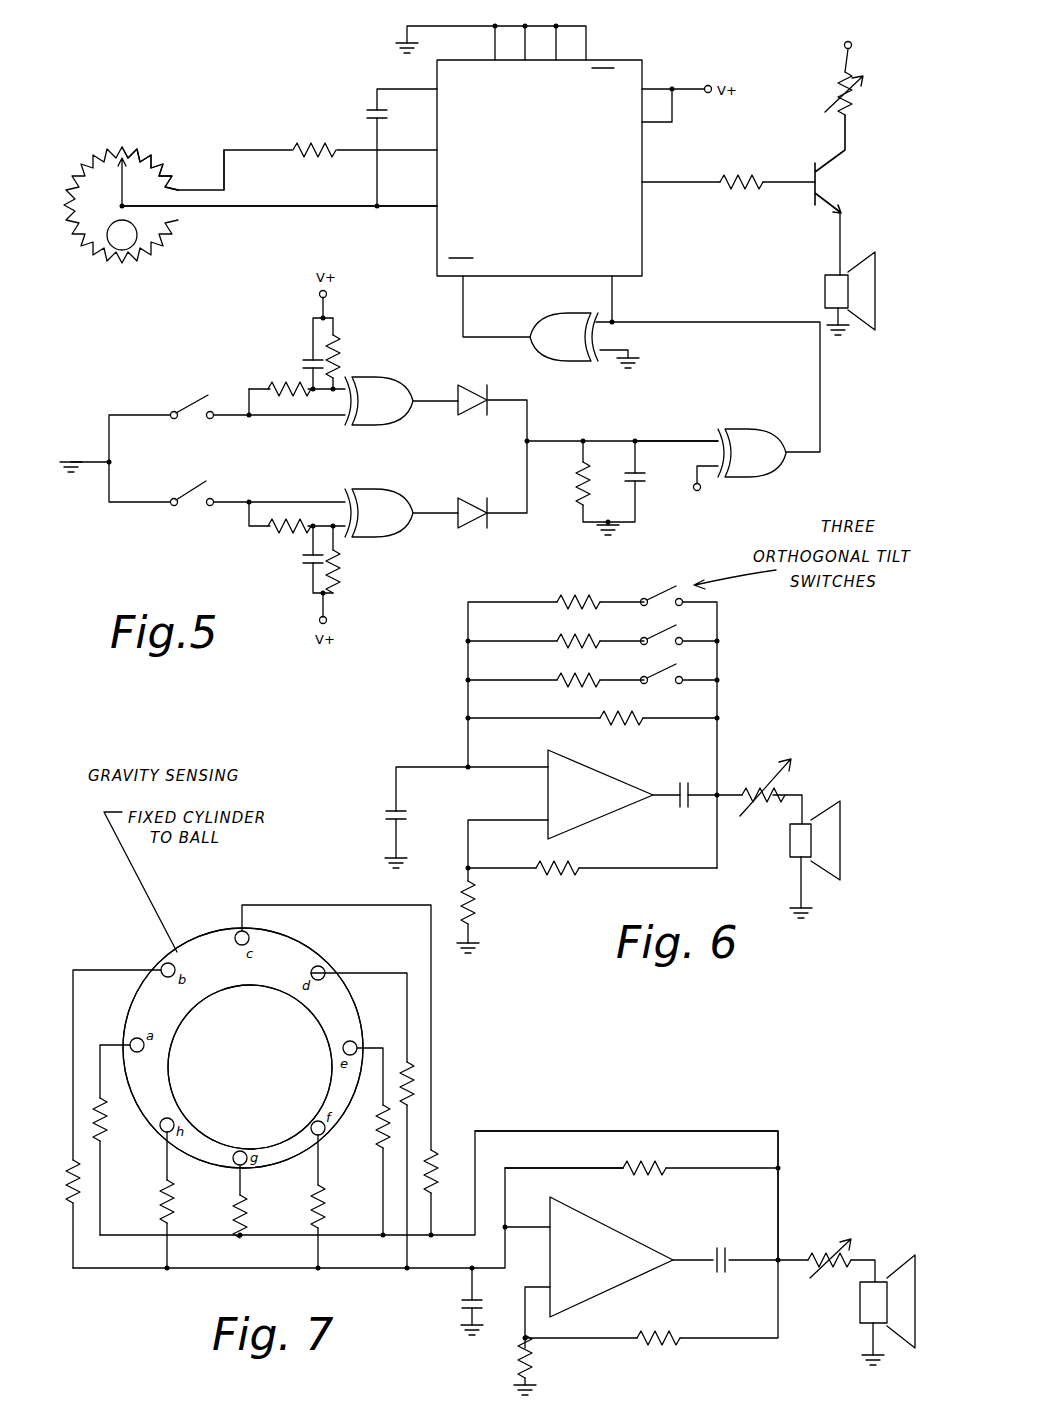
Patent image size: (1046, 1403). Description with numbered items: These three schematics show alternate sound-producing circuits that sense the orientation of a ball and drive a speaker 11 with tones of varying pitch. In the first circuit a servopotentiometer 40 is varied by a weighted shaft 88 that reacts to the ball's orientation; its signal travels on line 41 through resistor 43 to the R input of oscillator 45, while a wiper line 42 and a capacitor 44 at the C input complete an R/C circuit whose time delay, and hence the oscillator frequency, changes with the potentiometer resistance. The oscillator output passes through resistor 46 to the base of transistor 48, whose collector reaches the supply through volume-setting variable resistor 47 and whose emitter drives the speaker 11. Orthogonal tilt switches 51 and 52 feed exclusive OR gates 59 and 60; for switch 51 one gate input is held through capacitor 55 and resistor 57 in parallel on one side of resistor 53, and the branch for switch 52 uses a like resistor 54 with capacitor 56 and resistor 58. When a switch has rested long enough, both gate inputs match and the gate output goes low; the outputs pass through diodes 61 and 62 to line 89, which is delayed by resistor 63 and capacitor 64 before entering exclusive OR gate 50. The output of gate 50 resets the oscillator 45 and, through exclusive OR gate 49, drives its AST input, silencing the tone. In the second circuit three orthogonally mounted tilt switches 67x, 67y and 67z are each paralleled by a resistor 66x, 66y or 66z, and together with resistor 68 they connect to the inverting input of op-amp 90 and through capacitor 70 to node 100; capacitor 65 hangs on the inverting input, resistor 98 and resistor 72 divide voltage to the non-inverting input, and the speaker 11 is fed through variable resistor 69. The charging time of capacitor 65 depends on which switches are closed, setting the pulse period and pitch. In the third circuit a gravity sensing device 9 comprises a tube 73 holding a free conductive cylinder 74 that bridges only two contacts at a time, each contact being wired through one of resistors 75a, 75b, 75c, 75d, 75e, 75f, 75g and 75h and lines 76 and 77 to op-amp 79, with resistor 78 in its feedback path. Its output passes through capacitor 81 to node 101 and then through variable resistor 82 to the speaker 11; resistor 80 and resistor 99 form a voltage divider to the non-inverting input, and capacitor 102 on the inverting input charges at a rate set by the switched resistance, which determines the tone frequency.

In FIG. 7, the gravity sensing tilt switch 9 is at (184, 918).
In FIG. 5, the speaker 11 is at (878, 282).
In FIG. 6, the speaker 11 is at (842, 852).
In FIG. 7, the speaker 11 is at (917, 1318).
In FIG. 5, the servopotentiometer 40 is at (152, 154).
In FIG. 5, the line 41 is at (234, 149).
In FIG. 5, the potentiometer wiper lead 42 is at (240, 208).
In FIG. 5, the resistor 43 is at (300, 146).
In FIG. 5, the capacitor 44 is at (372, 109).
In FIG. 5, the oscillator 45 is at (620, 60).
In FIG. 5, the resistor 46 is at (735, 180).
In FIG. 5, the variable resistor 47 is at (855, 82).
In FIG. 5, the transistor 48 is at (845, 178).
In FIG. 5, the exclusive OR gate 49 is at (558, 360).
In FIG. 5, the exclusive OR gate 50 is at (760, 432).
In FIG. 5, the tilt switch 51 is at (184, 405).
In FIG. 5, the tilt switch 52 is at (192, 492).
In FIG. 5, the resistor 53 is at (268, 387).
In FIG. 5, the resistor 54 is at (280, 534).
In FIG. 5, the capacitor 55 is at (305, 358).
In FIG. 5, the capacitor 56 is at (308, 575).
In FIG. 5, the resistor 57 is at (342, 362).
In FIG. 5, the resistor 58 is at (348, 566).
In FIG. 5, the exclusive OR gate 59 is at (402, 388).
In FIG. 5, the exclusive OR gate 60 is at (400, 538).
In FIG. 5, the diode 61 is at (480, 388).
In FIG. 5, the diode 62 is at (475, 522).
In FIG. 5, the resistor 63 is at (579, 485).
In FIG. 5, the capacitor 64 is at (642, 490).
In FIG. 6, the capacitor 65 is at (388, 810).
In FIG. 6, the resistor 66x is at (578, 599).
In FIG. 6, the resistor 66y is at (584, 639).
In FIG. 6, the resistor 66z is at (584, 678).
In FIG. 6, the tilt switch 67x is at (678, 584).
In FIG. 6, the tilt switch 67y is at (678, 626).
In FIG. 6, the tilt switch 67z is at (678, 666).
In FIG. 6, the resistor 68 is at (632, 725).
In FIG. 6, the variable resistor 69 is at (748, 788).
In FIG. 6, the capacitor 70 is at (694, 806).
In FIG. 6, the resistor 72 is at (476, 891).
In FIG. 7, the tube 73 is at (378, 1035).
In FIG. 7, the conducting cylinder 74 is at (335, 1088).
In FIG. 7, the resistor 75a is at (103, 1130).
In FIG. 7, the resistor 75b is at (72, 1196).
In FIG. 7, the resistor 75c is at (434, 1186).
In FIG. 7, the resistor 75d is at (412, 1084).
In FIG. 7, the resistor 75e is at (381, 1130).
In FIG. 7, the resistor 75f is at (322, 1214).
In FIG. 7, the resistor 75g is at (243, 1218).
In FIG. 7, the resistor 75h is at (172, 1203).
In FIG. 7, the conductor 76 is at (712, 1131).
In FIG. 7, the conductor 77 is at (586, 1168).
In FIG. 7, the resistor 78 is at (676, 1178).
In FIG. 7, the op-amp 79 is at (611, 1257).
In FIG. 7, the resistor 80 is at (660, 1348).
In FIG. 7, the capacitor 81 is at (712, 1272).
In FIG. 7, the volume control potentiometer 82 is at (806, 1255).
In FIG. 5, the weighted shaft 88 is at (118, 180).
In FIG. 5, the line 89 is at (684, 440).
In FIG. 6, the op-amp 90 is at (600, 806).
In FIG. 6, the resistor 98 is at (566, 878).
In FIG. 7, the resistor 99 is at (520, 1360).
In FIG. 6, the node 100 is at (720, 801).
In FIG. 7, the node 101 is at (782, 1266).
In FIG. 7, the capacitor 102 is at (465, 1310).